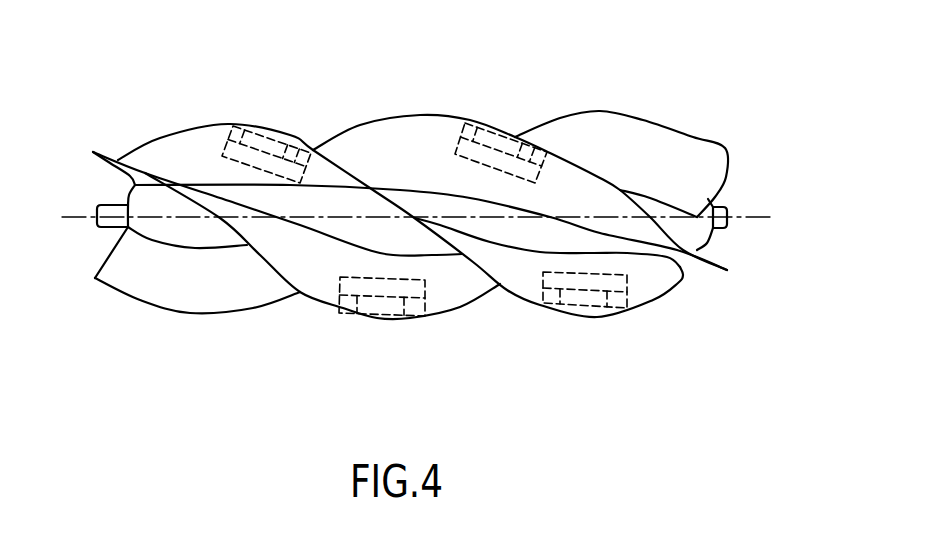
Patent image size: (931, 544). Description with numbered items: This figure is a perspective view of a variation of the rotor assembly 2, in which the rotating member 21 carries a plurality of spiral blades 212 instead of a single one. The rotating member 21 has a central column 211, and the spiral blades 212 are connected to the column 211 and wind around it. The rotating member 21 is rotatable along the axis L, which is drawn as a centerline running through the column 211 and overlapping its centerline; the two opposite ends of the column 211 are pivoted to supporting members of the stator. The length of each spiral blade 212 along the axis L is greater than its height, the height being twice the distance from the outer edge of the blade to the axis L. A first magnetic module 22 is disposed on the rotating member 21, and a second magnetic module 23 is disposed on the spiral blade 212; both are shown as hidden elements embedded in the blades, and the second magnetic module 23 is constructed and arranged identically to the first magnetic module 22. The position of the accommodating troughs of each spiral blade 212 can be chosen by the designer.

The rotor assembly 2 is at (112, 33).
The rotating member 21 is at (280, 399).
The column 211 is at (200, 238).
The spiral blade 212 is at (140, 300).
The first magnetic module 22 is at (240, 126).
The second magnetic module 23 is at (479, 123).
The axis L is at (748, 216).